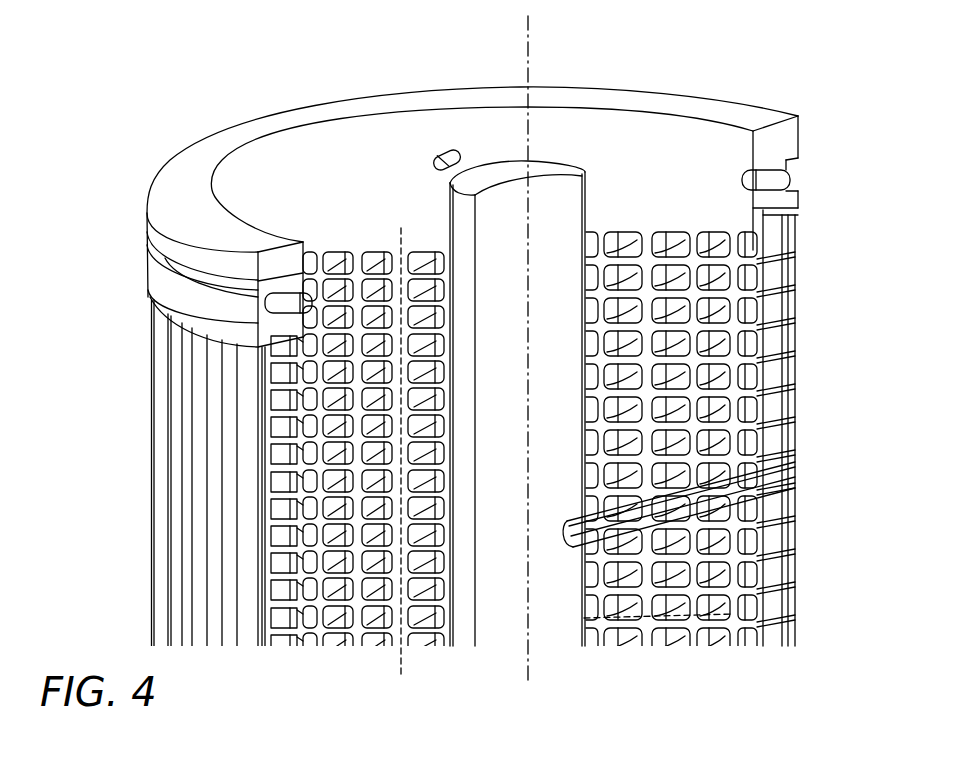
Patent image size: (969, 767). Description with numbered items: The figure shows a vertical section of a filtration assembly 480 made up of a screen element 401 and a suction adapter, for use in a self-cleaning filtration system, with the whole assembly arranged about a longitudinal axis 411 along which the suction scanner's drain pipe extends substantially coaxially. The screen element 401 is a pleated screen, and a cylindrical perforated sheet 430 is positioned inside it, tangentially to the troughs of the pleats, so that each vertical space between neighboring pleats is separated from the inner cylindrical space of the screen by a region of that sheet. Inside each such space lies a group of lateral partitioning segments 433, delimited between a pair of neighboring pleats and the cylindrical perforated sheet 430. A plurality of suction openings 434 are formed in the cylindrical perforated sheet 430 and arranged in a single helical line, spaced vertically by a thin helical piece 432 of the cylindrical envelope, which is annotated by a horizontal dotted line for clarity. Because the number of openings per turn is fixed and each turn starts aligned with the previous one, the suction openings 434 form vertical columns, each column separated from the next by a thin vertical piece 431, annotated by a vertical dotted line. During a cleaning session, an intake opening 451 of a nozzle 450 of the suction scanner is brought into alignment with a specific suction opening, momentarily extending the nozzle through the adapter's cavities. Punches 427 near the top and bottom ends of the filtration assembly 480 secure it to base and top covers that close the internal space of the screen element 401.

The screen element 401 is at (158, 440).
The longitudinal axis 411 is at (528, 16).
The punches 427 is at (448, 150).
The cylindrical perforated sheet 430 is at (762, 250).
The thin vertical piece 431 is at (401, 678).
The thin helical piece 432 is at (687, 625).
The lateral partitioning segments 433 is at (777, 366).
The suction openings 434 is at (327, 627).
The nozzle 450 is at (755, 462).
The intake opening 451 is at (760, 487).
The filtration assembly 480 is at (150, 86).